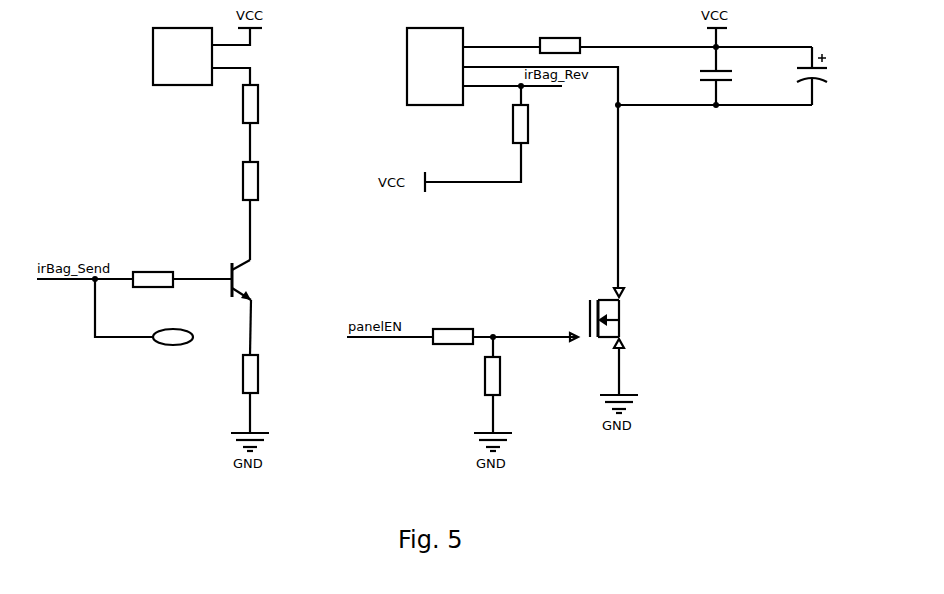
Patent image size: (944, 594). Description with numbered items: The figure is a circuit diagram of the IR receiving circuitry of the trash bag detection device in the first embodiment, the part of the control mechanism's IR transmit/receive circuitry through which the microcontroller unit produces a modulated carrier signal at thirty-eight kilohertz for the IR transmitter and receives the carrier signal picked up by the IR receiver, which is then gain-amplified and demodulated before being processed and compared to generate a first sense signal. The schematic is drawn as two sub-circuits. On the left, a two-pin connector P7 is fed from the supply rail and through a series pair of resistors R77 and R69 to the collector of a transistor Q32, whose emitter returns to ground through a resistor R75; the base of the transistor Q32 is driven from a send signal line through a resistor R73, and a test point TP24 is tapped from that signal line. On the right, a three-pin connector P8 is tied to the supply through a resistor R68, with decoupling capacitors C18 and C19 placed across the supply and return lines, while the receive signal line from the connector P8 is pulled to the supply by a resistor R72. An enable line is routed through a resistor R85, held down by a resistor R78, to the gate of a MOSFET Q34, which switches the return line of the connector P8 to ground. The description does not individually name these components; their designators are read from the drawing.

The connector P7 is at (182, 47).
The resistor R77 is at (260, 95).
The resistor R69 is at (260, 172).
The transistor Q32 is at (258, 280).
The resistor R75 is at (264, 374).
The resistor R73 is at (153, 270).
The test point TP24 is at (144, 312).
The connector P8 is at (435, 57).
The resistor R68 is at (560, 37).
The capacitor C18 is at (730, 76).
The electrolytic capacitor C19 is at (827, 76).
The resistor R72 is at (535, 114).
The MOSFET Q34 is at (611, 318).
The resistor R85 is at (453, 327).
The resistor R78 is at (506, 366).